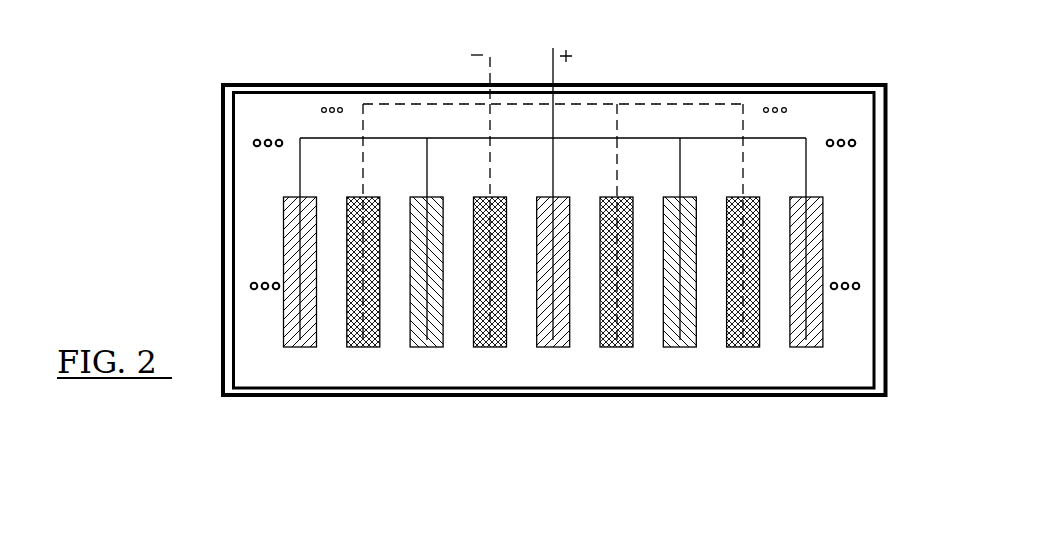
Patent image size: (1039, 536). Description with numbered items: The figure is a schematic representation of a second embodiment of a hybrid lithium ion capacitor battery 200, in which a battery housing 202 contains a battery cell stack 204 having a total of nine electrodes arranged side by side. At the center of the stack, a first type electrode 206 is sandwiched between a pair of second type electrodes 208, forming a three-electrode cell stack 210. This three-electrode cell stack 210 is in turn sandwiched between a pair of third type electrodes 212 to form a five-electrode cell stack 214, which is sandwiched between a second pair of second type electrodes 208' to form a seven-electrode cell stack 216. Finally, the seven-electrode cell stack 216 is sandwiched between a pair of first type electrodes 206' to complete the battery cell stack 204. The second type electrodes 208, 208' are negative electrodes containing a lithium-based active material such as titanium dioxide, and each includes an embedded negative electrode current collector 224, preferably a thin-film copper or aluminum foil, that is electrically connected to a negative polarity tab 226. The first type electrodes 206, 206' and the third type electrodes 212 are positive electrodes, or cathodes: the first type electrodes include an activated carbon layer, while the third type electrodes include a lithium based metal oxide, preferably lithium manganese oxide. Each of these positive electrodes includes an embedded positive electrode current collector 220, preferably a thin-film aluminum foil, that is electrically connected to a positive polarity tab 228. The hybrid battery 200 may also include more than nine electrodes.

The hybrid lithium ion capacitor battery 200 is at (1005, 78).
The battery housing 202 is at (887, 130).
The battery cell stack 204 is at (828, 110).
The first type electrode 206 is at (585, 315).
The first type electrodes 206' is at (588, 315).
The second type electrodes 208 is at (586, 315).
The second pair of second type electrodes 208' is at (587, 315).
The 3-electrode cell stack 210 is at (487, 163).
The third type electrodes 212 is at (443, 338).
The 5-electrode cell stack 214 is at (425, 160).
The 7-electrode cell stack 216 is at (361, 148).
The positive electrode current collector 220 is at (555, 242).
The negative electrode current collector 224 is at (619, 242).
The negative polarity tab 226 is at (490, 64).
The positive polarity tab 228 is at (554, 81).